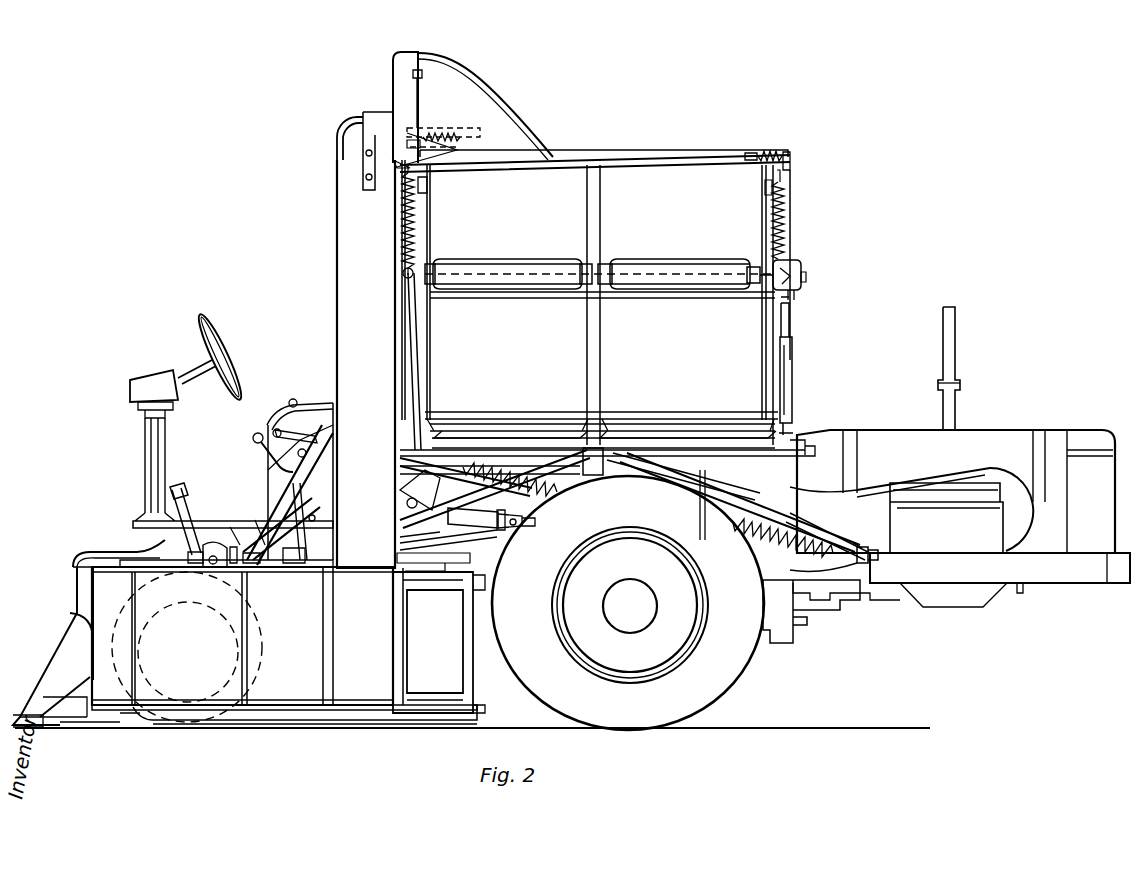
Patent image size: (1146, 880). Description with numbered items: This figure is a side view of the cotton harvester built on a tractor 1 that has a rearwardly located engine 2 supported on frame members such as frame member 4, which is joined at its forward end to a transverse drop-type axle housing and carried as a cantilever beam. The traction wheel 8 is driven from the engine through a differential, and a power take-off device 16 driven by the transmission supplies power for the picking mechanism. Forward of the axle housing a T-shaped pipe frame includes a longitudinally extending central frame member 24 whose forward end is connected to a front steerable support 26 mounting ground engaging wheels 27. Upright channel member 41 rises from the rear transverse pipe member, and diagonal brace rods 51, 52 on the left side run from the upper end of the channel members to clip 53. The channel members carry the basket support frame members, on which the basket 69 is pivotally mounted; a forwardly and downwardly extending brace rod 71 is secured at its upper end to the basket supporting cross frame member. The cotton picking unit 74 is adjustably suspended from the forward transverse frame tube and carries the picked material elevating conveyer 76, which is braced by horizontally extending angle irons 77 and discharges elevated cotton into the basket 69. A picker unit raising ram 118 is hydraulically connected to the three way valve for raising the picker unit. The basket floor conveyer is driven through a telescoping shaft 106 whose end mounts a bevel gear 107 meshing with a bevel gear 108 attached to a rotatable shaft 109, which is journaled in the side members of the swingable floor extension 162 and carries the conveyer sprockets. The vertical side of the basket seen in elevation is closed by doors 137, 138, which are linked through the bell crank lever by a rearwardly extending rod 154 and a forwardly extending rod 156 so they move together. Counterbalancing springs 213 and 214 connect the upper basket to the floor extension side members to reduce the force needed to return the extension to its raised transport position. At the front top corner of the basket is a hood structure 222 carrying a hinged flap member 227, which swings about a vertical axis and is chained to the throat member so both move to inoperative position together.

The tractor 1 is at (972, 458).
The engine 2 is at (1000, 526).
The frame member 4 is at (1062, 582).
The traction wheel 8 is at (735, 692).
The power take-off device 16 is at (786, 640).
The longitudinally extending central frame member 24 is at (498, 553).
The front steerable support 26 is at (172, 558).
The ground engaging wheels 27 is at (210, 723).
The upright channel member 41 is at (593, 476).
The diagonal brace rod 51 is at (812, 530).
The diagonal brace rod 52 is at (456, 499).
The clip 53 is at (878, 552).
The basket 69 is at (556, 248).
The brace rod 71 is at (700, 488).
The cotton picking unit 74 is at (297, 620).
The picked material elevating conveyer 76 is at (337, 324).
The angle irons 77 is at (338, 557).
The telescoping shaft 106 is at (792, 377).
The bevel gear 107 is at (806, 288).
The bevel gear 108 is at (796, 265).
The rotatable shaft 109 is at (645, 293).
The picker unit raising ram 118 is at (447, 520).
The door 137 is at (568, 180).
The door 138 is at (655, 180).
The rearwardly extending rod 154 is at (738, 153).
The forwardly extending rod 156 is at (520, 152).
The floor extension 162 is at (693, 268).
The counterbalancing spring 213 is at (402, 232).
The counterbalancing spring 214 is at (785, 216).
The hood structure 222 is at (545, 90).
The flap member 227 is at (393, 70).